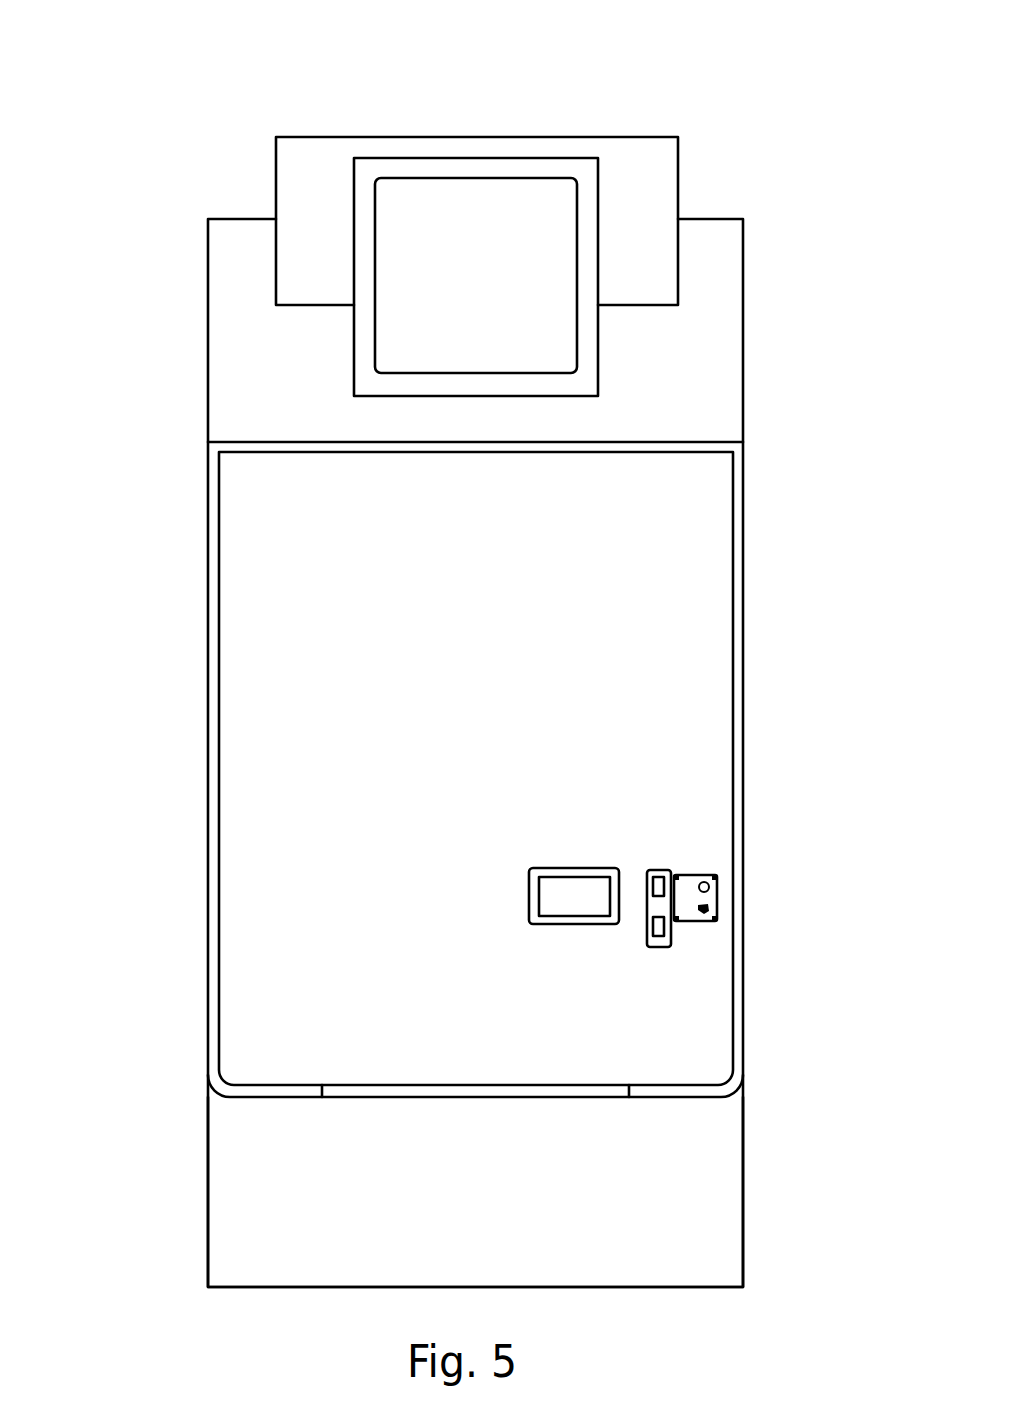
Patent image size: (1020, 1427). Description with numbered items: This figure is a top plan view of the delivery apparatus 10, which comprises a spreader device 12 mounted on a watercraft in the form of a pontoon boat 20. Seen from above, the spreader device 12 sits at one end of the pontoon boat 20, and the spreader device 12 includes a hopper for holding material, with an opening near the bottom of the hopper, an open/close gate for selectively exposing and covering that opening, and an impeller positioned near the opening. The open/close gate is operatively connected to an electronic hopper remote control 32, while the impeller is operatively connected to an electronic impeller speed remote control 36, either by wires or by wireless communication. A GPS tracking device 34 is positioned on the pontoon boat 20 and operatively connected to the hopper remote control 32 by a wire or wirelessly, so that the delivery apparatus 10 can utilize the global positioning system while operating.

The delivery apparatus 10 is at (88, 247).
The spreader device 12 is at (461, 165).
The pontoon boat 20 is at (326, 1231).
The hopper remote control 32 is at (661, 875).
The GPS tracking device 34 is at (567, 900).
The impeller speed remote control 36 is at (695, 883).